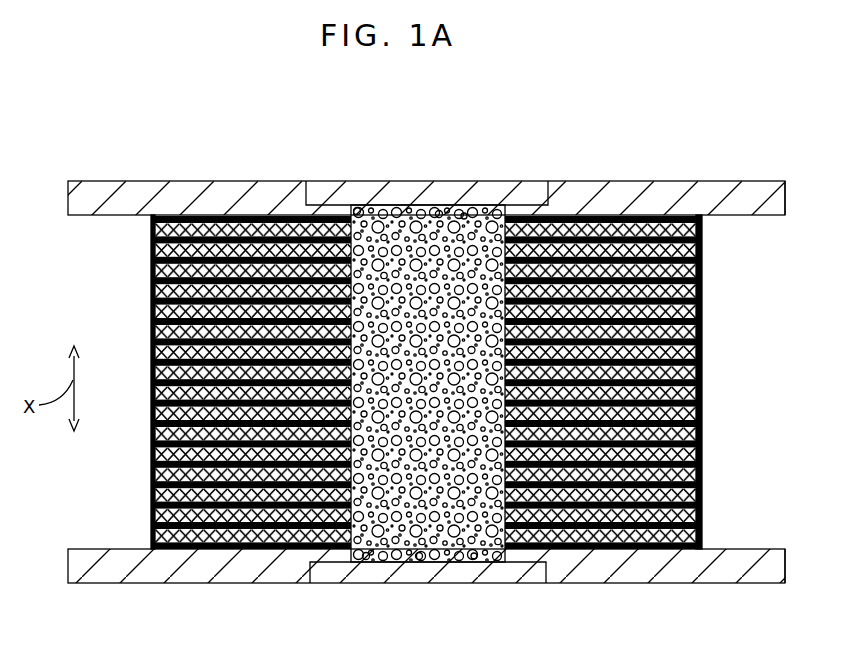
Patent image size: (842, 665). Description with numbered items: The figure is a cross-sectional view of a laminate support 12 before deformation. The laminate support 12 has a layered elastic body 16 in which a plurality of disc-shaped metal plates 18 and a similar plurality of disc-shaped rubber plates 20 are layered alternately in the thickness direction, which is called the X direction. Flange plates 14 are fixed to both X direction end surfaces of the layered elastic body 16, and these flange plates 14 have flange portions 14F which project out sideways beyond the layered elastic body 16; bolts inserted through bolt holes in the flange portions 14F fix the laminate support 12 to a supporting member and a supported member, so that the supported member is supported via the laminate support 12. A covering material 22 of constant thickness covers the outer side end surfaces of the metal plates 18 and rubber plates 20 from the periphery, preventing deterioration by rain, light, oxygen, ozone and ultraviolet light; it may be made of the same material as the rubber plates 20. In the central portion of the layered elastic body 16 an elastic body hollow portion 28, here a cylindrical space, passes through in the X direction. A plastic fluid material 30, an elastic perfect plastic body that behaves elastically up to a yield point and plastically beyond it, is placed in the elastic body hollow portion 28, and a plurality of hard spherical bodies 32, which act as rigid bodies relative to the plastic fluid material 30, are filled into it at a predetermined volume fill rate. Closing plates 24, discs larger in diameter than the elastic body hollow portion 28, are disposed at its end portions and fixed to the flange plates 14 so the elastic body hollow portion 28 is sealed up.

The laminate support 12 is at (709, 61).
The flange plate 14 is at (652, 196).
The flange portion 14F is at (740, 188).
The layered elastic body 16 is at (476, 382).
The metal plate 18 is at (694, 233).
The rubber plate 20 is at (694, 215).
The covering material 22 is at (694, 333).
The closing plate 24 is at (514, 185).
The elastic body hollow portion 28 is at (404, 374).
The plastic fluid material 30 is at (383, 203).
The spherical body 32 is at (348, 200).